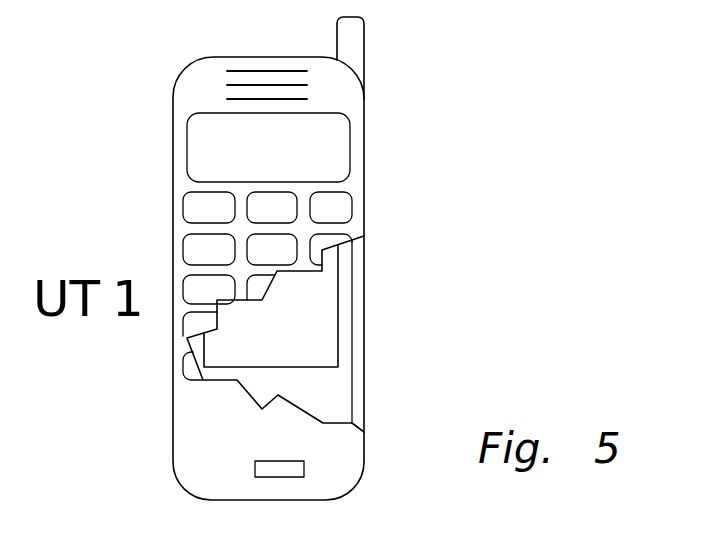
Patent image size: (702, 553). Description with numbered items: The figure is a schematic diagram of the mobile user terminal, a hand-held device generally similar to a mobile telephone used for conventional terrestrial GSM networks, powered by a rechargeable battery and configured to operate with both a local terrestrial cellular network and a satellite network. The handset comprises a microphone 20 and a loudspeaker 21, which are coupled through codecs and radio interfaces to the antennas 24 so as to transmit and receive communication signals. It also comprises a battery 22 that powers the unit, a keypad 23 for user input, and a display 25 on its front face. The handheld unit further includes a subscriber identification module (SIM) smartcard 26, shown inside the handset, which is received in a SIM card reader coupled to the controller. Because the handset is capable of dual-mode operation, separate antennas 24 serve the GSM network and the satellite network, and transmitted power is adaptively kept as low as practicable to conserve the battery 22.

The microphone 20 is at (293, 477).
The loudspeaker 21 is at (290, 85).
The battery 22 is at (338, 398).
The keypad 23 is at (343, 212).
The antennas 24 is at (357, 43).
The display 25 is at (332, 152).
The subscriber identification module (SIM) smartcard 26 is at (320, 318).